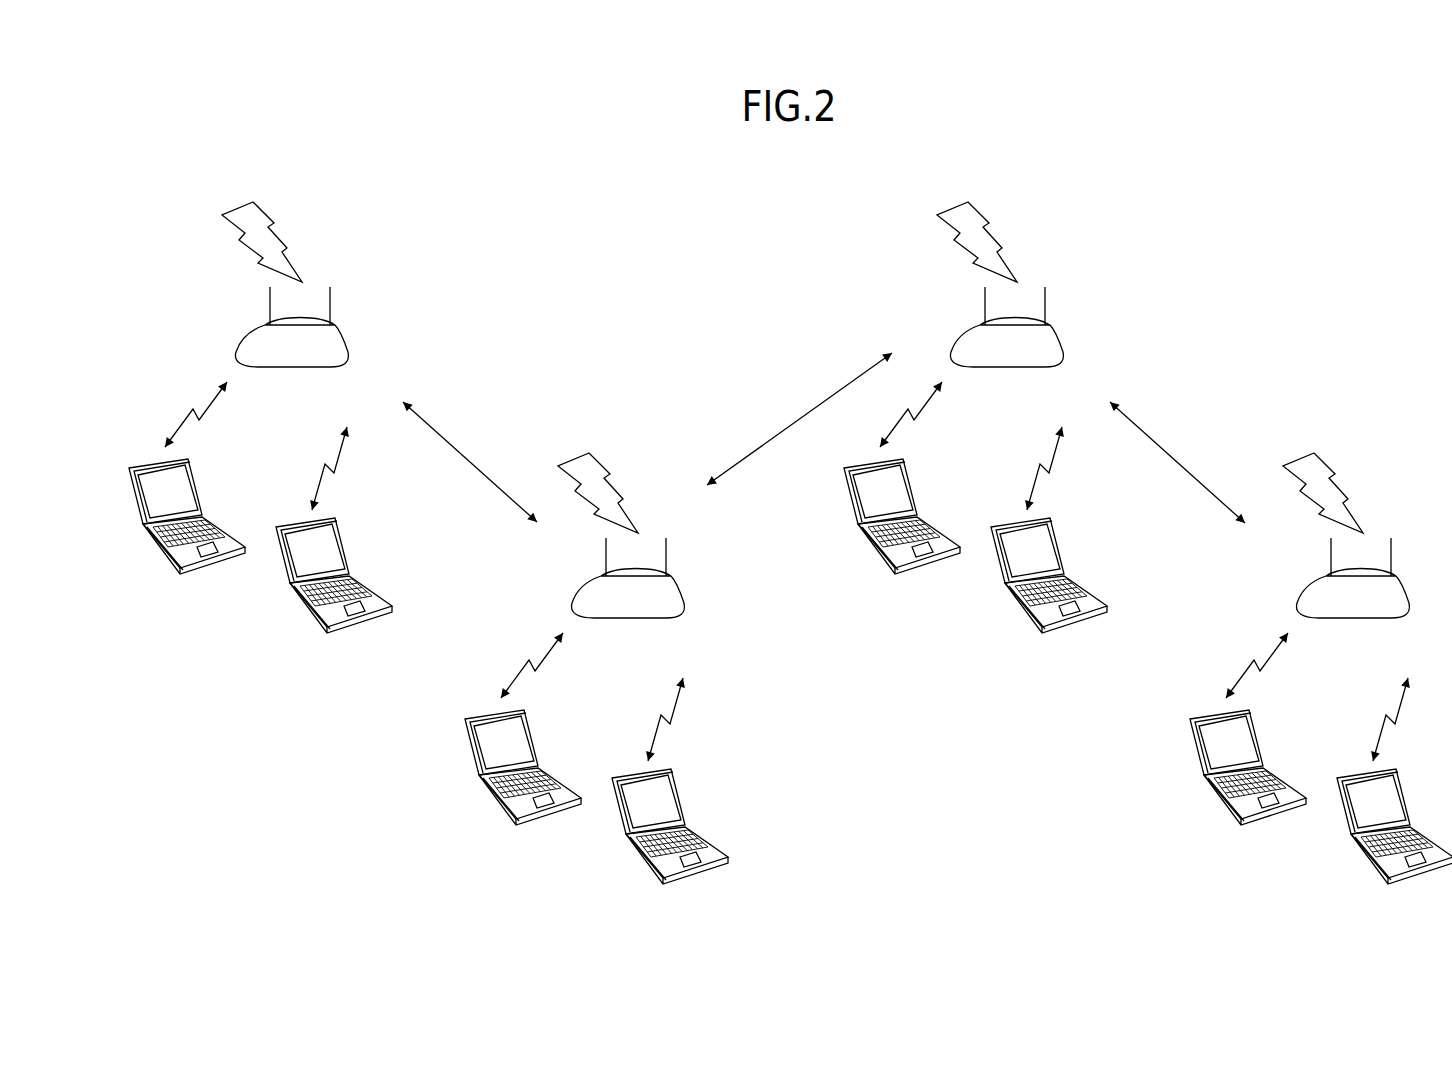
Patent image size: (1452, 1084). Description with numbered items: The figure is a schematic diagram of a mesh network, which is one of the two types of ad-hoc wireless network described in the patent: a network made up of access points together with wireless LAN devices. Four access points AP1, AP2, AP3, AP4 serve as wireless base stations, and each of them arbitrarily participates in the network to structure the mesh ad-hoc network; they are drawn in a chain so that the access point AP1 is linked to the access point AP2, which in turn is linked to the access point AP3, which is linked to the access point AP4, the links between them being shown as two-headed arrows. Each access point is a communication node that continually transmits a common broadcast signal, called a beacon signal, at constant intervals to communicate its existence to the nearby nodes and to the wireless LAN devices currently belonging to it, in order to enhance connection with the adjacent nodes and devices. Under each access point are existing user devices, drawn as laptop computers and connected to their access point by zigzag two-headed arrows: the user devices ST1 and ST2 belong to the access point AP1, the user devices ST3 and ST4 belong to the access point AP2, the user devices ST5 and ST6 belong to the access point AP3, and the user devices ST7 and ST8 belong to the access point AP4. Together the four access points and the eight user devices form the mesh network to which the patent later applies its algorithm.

The access point AP1 is at (285, 309).
The access point AP2 is at (621, 560).
The access point AP3 is at (1000, 309).
The access point AP4 is at (1346, 560).
The user device ST1 is at (187, 536).
The user device ST2 is at (334, 595).
The user device ST3 is at (523, 787).
The user device ST4 is at (670, 846).
The user device ST5 is at (902, 536).
The user device ST6 is at (1049, 595).
The user device ST7 is at (1248, 787).
The user device ST8 is at (1394, 846).